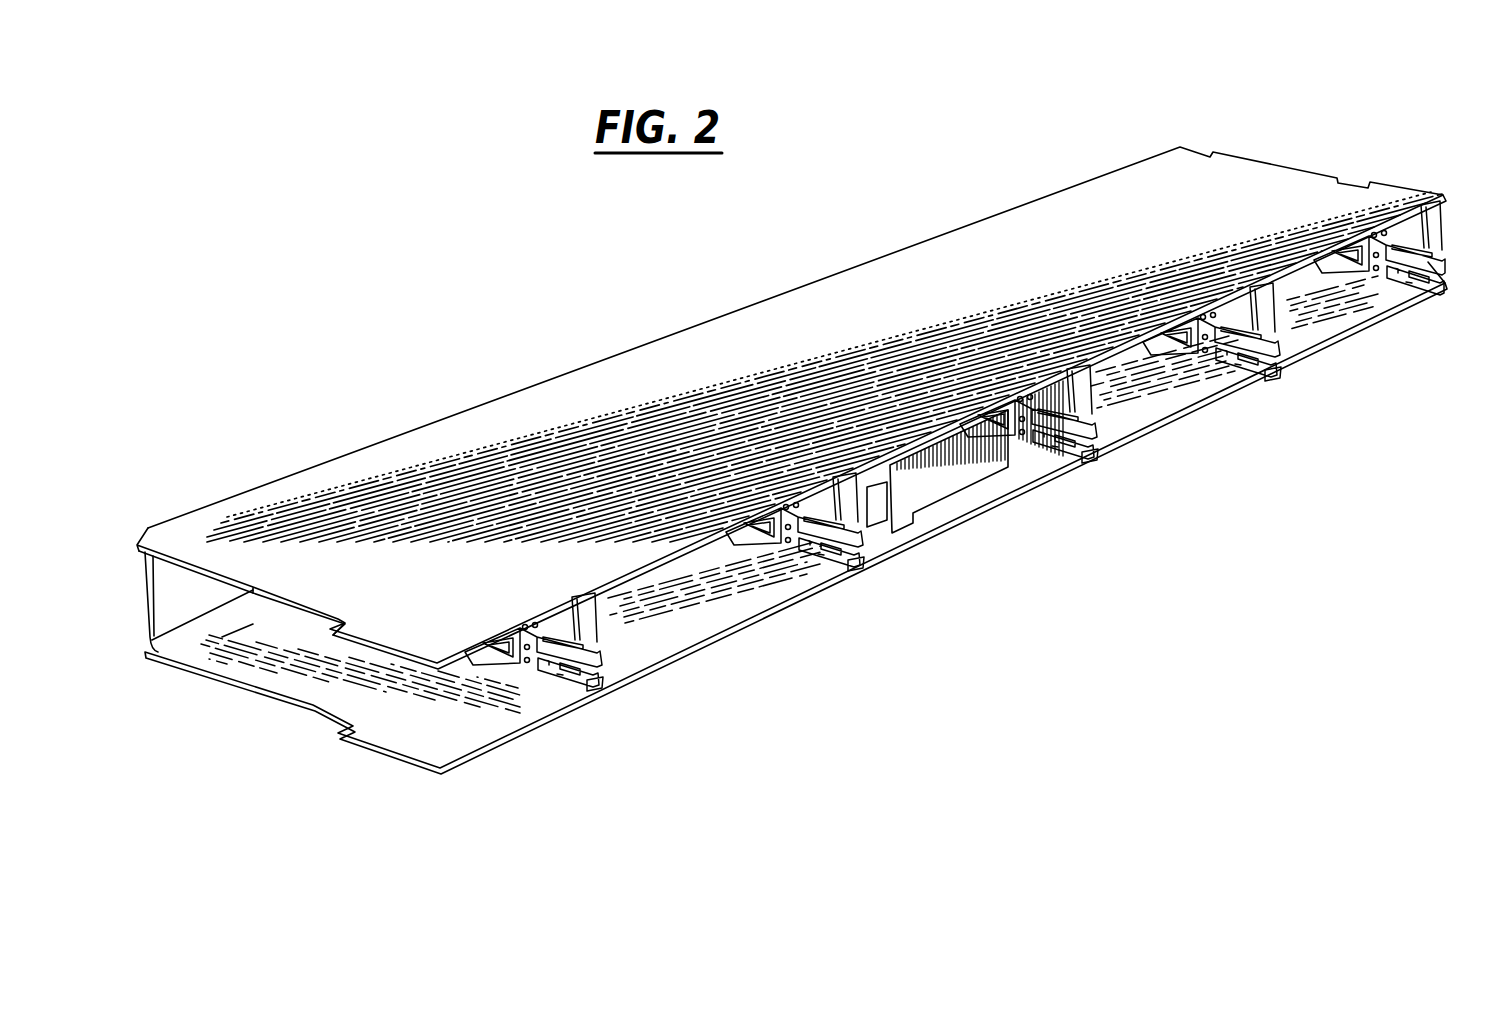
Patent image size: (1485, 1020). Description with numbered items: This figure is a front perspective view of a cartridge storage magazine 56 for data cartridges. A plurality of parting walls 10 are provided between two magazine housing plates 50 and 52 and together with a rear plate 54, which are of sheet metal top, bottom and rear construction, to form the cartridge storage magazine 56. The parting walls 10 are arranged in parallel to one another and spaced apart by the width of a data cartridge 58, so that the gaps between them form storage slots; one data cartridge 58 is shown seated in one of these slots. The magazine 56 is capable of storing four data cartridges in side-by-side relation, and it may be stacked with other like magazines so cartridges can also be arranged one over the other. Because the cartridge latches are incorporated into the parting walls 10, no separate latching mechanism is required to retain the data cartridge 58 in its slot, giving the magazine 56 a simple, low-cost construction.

The parting wall 10 is at (633, 674).
The magazine housing plate 50 is at (1142, 175).
The magazine housing plate 52 is at (1383, 277).
The rear plate 54 is at (140, 593).
The cartridge storage magazine 56 is at (998, 191).
The data cartridge 58 is at (953, 503).